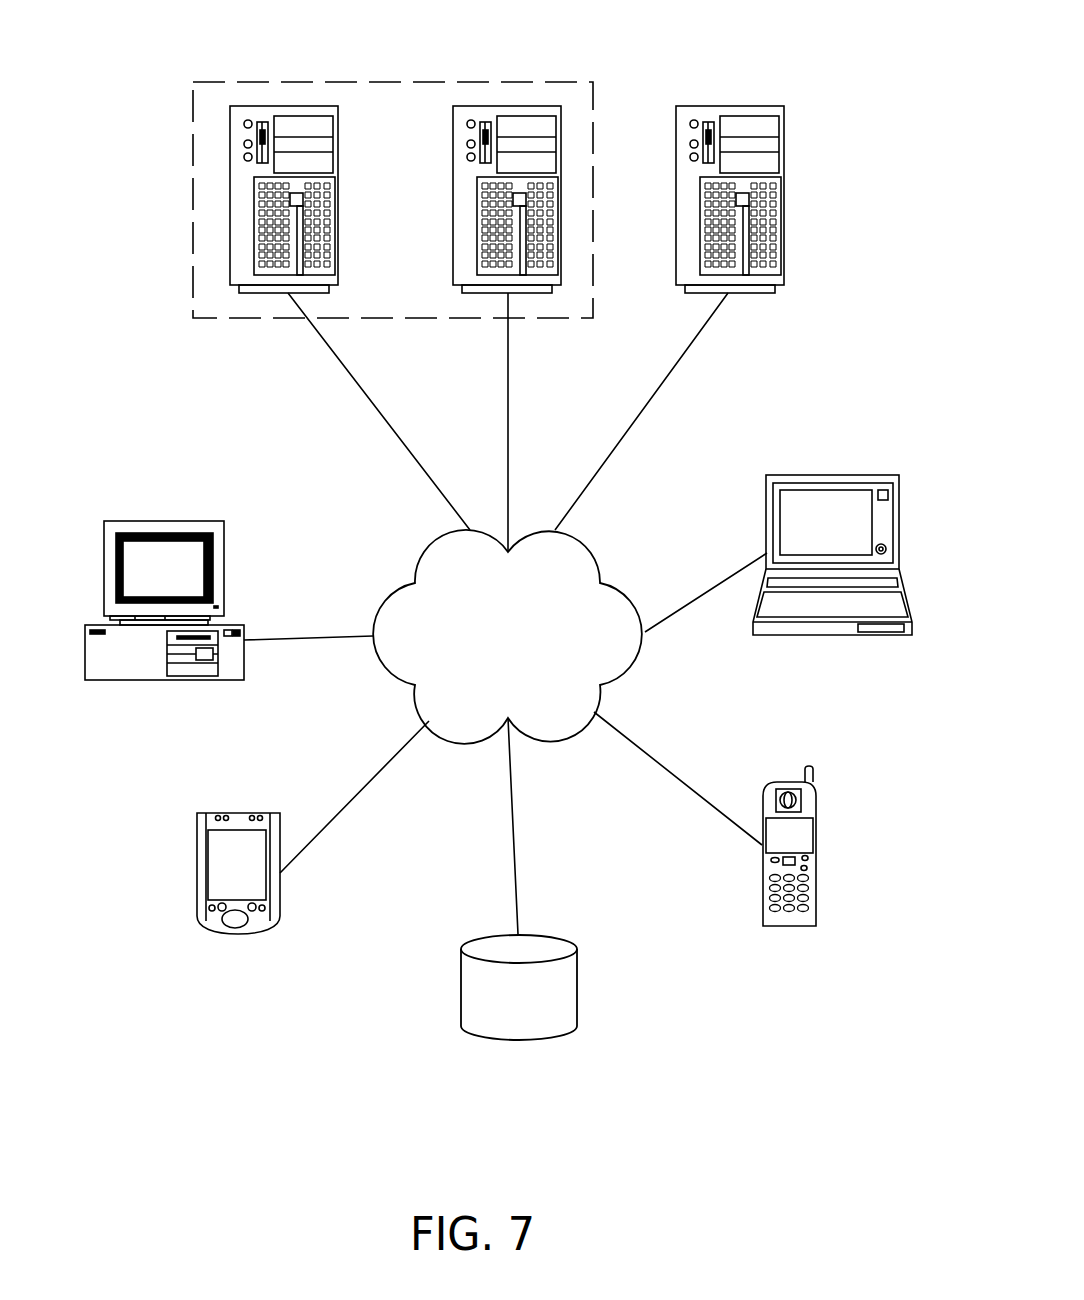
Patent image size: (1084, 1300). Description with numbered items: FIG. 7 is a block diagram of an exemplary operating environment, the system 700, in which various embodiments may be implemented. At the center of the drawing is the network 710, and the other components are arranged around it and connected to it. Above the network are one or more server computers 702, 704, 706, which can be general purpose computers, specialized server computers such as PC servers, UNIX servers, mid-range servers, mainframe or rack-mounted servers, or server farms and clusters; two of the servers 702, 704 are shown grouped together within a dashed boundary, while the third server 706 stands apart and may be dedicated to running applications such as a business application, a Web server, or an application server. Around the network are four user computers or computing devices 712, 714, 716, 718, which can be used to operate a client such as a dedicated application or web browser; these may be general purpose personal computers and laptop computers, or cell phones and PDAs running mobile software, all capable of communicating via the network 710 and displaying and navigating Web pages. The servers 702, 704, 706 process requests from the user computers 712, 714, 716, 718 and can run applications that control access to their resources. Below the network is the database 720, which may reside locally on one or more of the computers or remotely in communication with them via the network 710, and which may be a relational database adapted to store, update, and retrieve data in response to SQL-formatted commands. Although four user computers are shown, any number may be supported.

The system 700 is at (881, 107).
The server computer 702 is at (268, 106).
The server computer 704 is at (507, 106).
The server computer 706 is at (785, 195).
The network 710 is at (488, 684).
The user computer 712 is at (162, 521).
The user computer 714 is at (830, 475).
The user computer 716 is at (787, 928).
The user computer 718 is at (238, 935).
The database 720 is at (539, 1038).